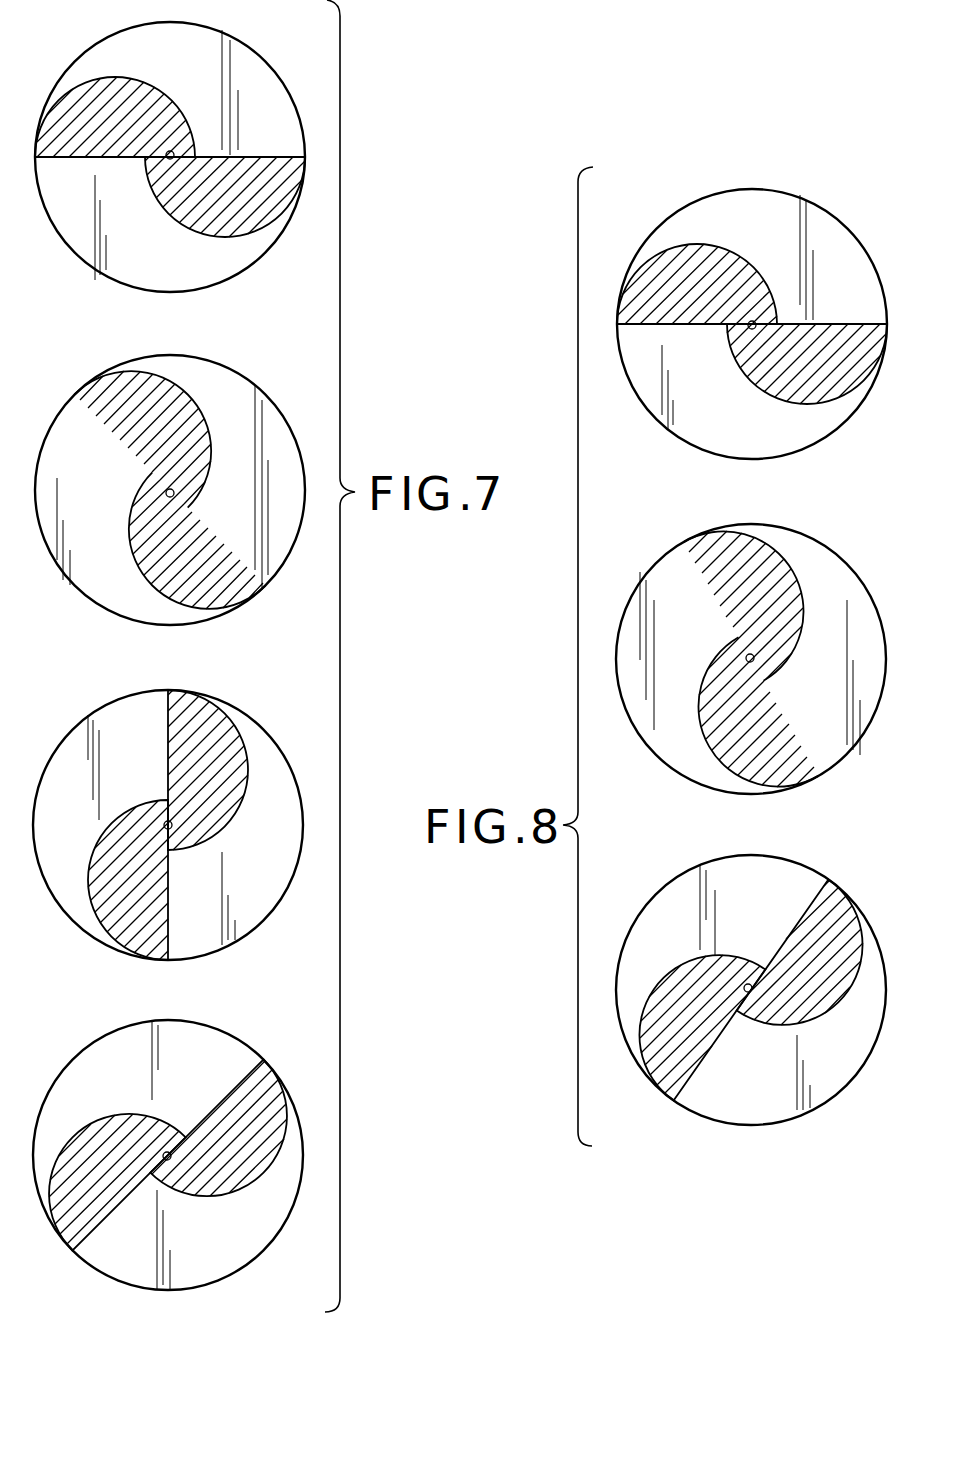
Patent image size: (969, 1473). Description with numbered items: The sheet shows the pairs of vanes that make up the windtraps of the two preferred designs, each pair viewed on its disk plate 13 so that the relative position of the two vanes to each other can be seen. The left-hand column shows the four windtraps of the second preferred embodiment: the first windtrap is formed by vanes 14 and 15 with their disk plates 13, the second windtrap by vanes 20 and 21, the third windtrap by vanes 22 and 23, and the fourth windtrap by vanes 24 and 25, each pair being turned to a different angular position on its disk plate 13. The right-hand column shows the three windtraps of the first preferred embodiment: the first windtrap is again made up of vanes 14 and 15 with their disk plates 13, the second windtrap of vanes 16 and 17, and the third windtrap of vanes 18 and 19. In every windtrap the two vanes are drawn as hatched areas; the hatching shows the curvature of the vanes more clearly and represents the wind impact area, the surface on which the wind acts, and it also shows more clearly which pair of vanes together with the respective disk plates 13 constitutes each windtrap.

In FIG. 7, the disk plate 13 is at (123, 238).
In FIG. 8, the disk plate 13 is at (732, 212).
In FIG. 7, the vane 14 is at (100, 68).
In FIG. 8, the vane 14 is at (672, 242).
In FIG. 7, the vane 15 is at (243, 237).
In FIG. 8, the vane 15 is at (820, 405).
In FIG. 8, the vane 16 is at (785, 562).
In FIG. 8, the vane 17 is at (732, 773).
In FIG. 8, the vane 18 is at (823, 1008).
In FIG. 8, the vane 19 is at (667, 973).
In FIG. 7, the vane 20 is at (190, 392).
In FIG. 7, the vane 21 is at (157, 597).
In FIG. 7, the vane 22 is at (233, 728).
In FIG. 7, the vane 23 is at (88, 887).
In FIG. 7, the vane 24 is at (253, 1182).
In FIG. 7, the vane 25 is at (82, 1123).